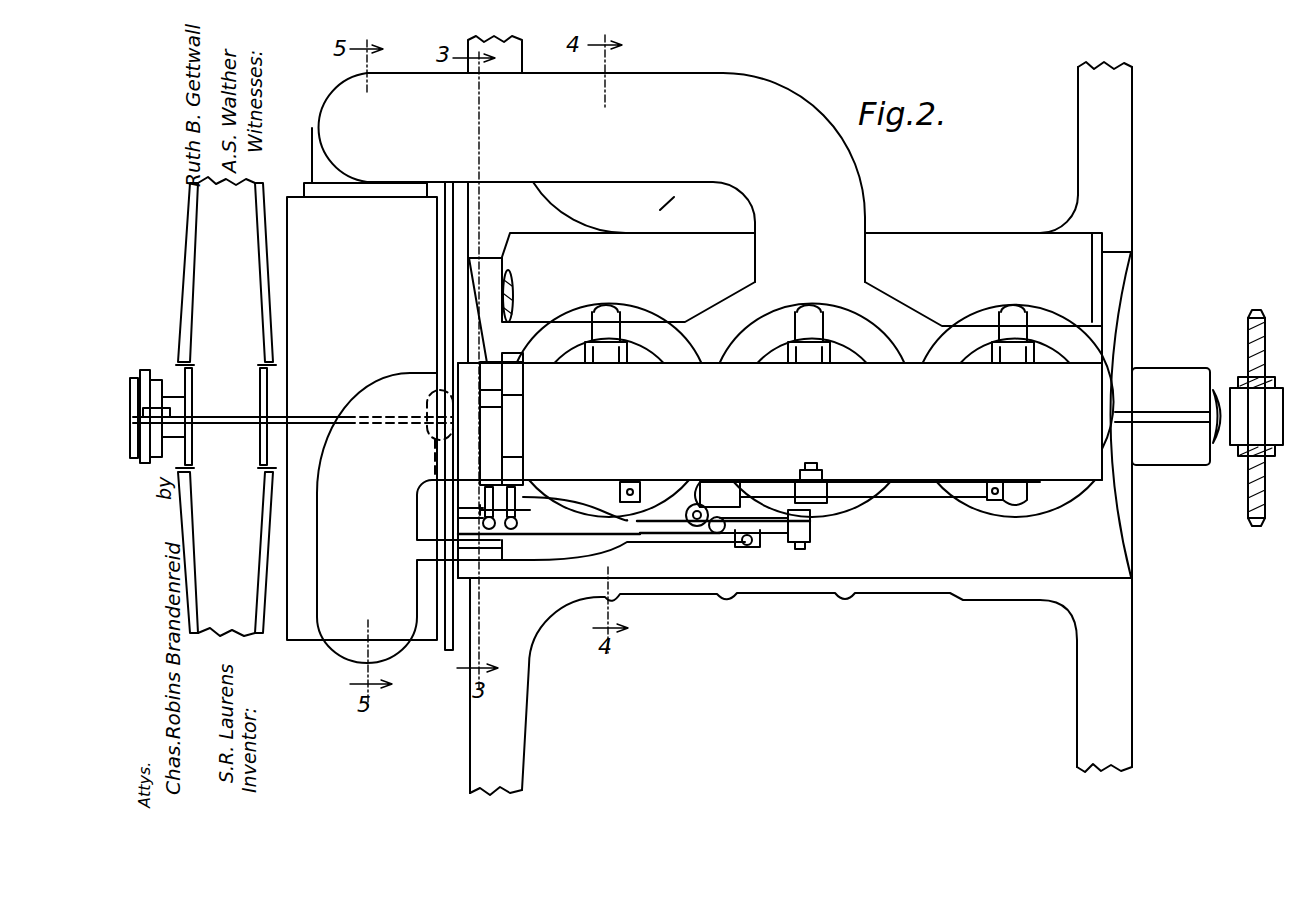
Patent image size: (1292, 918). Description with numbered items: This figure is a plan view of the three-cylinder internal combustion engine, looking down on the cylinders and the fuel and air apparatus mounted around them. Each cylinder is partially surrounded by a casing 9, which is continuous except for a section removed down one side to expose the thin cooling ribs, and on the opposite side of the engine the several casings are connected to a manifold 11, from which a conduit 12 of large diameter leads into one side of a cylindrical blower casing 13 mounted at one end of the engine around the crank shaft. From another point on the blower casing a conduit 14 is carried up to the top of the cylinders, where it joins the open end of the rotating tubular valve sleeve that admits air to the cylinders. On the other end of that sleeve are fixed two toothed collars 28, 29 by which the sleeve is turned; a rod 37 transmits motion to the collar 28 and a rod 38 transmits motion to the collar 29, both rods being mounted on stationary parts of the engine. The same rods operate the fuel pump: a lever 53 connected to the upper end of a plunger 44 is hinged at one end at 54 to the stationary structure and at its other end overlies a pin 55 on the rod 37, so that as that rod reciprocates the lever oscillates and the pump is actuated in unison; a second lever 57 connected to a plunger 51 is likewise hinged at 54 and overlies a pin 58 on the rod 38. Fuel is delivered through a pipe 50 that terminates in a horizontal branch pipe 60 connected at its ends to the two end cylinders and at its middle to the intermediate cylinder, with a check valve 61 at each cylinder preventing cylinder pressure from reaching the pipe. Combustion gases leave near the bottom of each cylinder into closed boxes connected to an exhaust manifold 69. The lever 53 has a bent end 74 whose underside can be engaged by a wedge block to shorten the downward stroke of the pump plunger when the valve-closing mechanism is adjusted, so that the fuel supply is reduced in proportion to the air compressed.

The casing 9 is at (640, 322).
The manifold 11 is at (900, 314).
The conduit 12 is at (785, 102).
The blower casing 13 is at (362, 411).
The conduit 14 is at (531, 518).
The toothed collar 28 is at (493, 424).
The toothed collar 29 is at (520, 432).
The rod 37 is at (493, 510).
The rod 38 is at (514, 490).
The plunger 44 is at (717, 534).
The pipe 50 is at (717, 490).
The plunger 51 is at (697, 527).
The lever 53 is at (777, 533).
The hinge 54 is at (810, 523).
The pin 55 is at (502, 541).
The lever 57 is at (667, 521).
The pin 58 is at (575, 508).
The branch pipe 60 is at (912, 492).
The check valve 61 is at (627, 482).
The exhaust manifold 69 is at (972, 240).
The bent end 74 is at (482, 514).